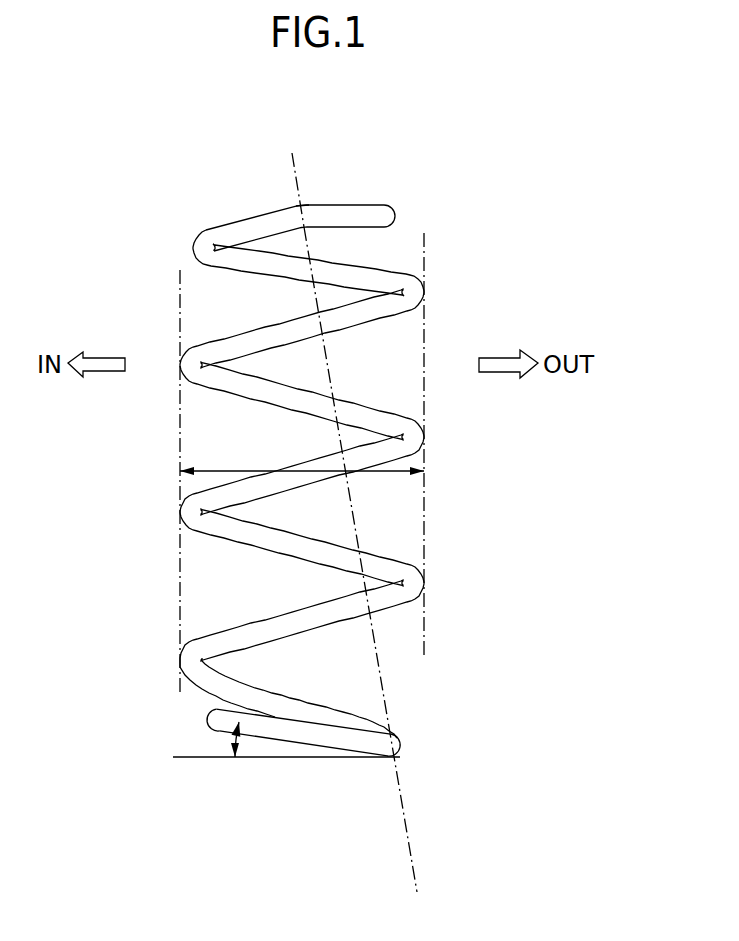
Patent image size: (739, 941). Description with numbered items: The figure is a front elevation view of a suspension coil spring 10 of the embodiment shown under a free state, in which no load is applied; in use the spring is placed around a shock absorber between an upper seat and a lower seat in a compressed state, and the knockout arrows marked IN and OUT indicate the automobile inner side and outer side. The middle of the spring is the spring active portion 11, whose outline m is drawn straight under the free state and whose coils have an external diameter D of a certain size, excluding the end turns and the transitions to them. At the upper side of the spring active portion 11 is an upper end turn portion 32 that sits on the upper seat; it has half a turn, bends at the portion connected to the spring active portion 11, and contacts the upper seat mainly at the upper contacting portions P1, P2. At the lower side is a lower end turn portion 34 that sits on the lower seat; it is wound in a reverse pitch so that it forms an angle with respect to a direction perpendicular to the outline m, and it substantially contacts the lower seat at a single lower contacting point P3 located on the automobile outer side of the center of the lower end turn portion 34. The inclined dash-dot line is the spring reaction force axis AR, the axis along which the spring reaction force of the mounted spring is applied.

The suspension coil spring 10 is at (390, 183).
The spring active portion 11 is at (408, 418).
The upper end turn portion 32 is at (386, 216).
The lower end turn portion 34 is at (218, 718).
The upper contacting portion P1 is at (302, 207).
The upper contacting portion P2 is at (284, 168).
The lower contacting point P3 is at (393, 758).
The spring reaction force axis AR is at (358, 532).
The outline of the spring active portion m is at (180, 625).
The external diameter D is at (302, 458).